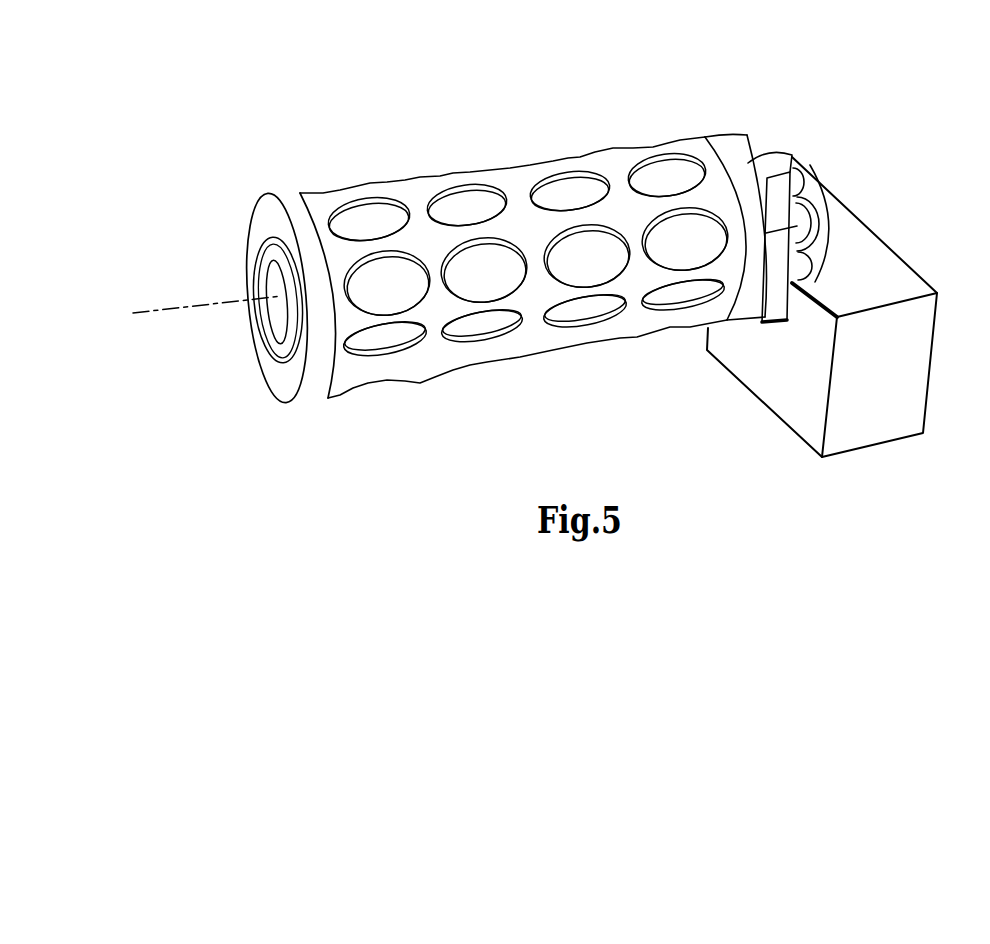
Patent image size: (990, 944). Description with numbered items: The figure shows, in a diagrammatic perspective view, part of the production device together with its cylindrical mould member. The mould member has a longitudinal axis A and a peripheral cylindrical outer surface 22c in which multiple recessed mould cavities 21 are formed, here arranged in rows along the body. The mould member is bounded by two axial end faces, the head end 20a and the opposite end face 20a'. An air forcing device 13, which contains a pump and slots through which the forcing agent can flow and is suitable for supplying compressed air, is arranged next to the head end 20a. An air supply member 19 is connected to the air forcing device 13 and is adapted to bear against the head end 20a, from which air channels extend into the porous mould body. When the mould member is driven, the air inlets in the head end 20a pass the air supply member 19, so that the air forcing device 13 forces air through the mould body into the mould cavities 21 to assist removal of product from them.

The air forcing device 13 is at (822, 307).
The air supply member 19 is at (763, 168).
The head end of the mould member 20a is at (757, 182).
The axial mould member end face 20a' is at (244, 297).
The recessed mould cavities 21 is at (477, 197).
The peripheral cylindrical outer surface 22c is at (413, 192).
The longitudinal axis A is at (207, 291).